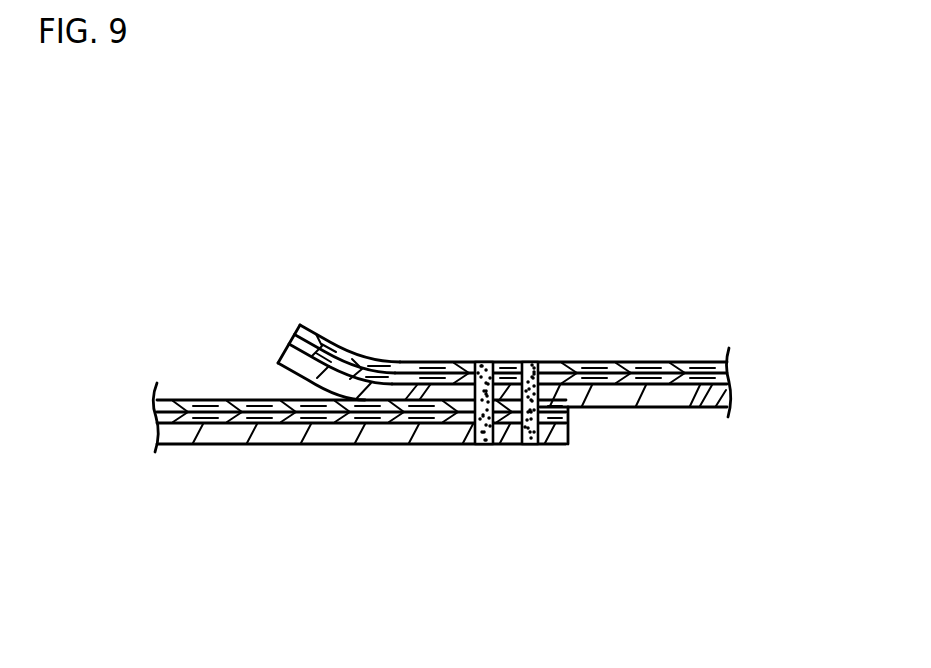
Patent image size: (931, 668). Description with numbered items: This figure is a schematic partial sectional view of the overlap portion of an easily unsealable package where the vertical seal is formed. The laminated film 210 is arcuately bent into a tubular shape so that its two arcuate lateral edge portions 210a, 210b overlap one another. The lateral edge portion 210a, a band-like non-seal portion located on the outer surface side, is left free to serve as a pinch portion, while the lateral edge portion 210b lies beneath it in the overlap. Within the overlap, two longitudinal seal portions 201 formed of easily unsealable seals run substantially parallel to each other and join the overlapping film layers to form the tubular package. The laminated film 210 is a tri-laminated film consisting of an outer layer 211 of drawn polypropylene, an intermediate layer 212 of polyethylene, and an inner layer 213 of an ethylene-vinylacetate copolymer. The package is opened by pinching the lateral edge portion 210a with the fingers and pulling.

The longitudinal seal portion 201 is at (482, 363).
The laminated film 210 is at (250, 446).
The lateral edge portion 210a is at (282, 366).
The lateral edge portion 210b is at (547, 445).
The outer layer 211 is at (690, 362).
The intermediate layer 212 is at (727, 377).
The inner layer 213 is at (688, 407).